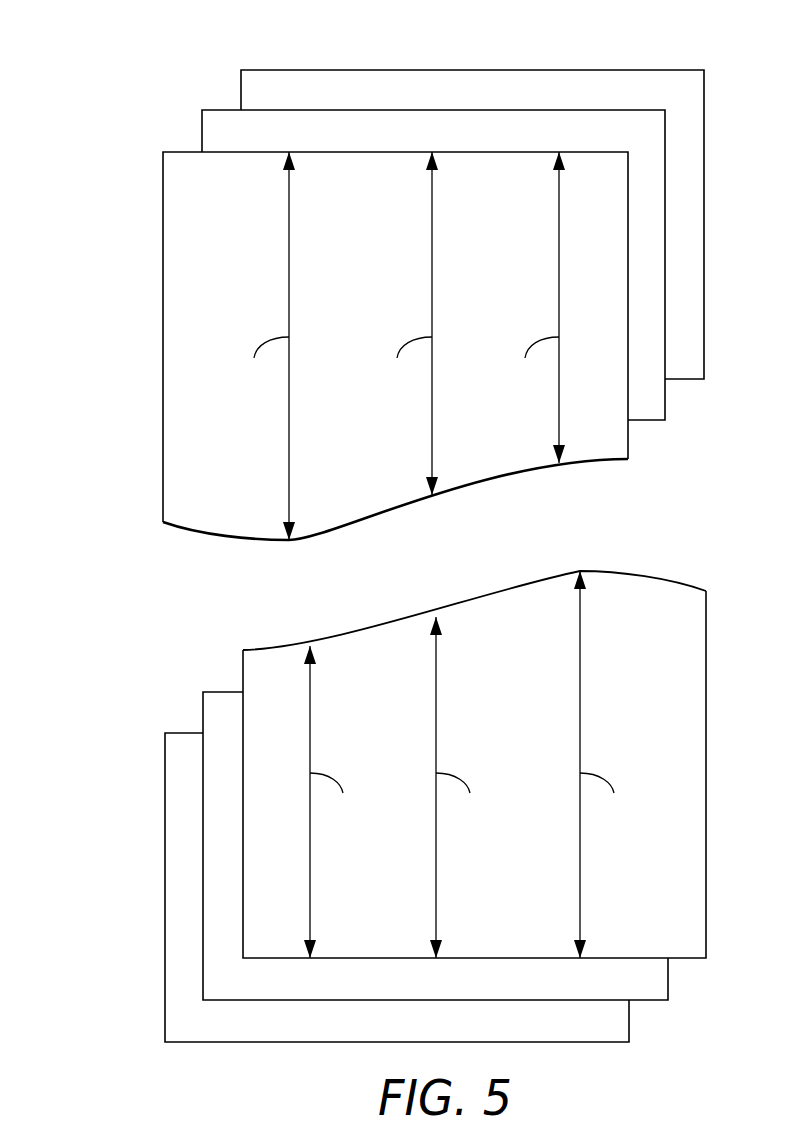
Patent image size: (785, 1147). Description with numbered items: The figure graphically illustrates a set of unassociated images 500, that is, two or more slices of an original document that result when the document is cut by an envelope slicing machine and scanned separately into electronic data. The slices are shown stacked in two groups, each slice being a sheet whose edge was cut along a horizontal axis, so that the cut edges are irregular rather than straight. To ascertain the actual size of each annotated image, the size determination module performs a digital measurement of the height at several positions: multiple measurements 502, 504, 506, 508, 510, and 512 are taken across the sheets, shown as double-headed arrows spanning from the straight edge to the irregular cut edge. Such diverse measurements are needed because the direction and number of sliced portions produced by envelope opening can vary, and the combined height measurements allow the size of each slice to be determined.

The unassociated images 500 is at (157, 60).
The measurement 502 is at (289, 195).
The measurement 504 is at (432, 195).
The measurement 506 is at (559, 195).
The measurement 508 is at (310, 915).
The measurement 510 is at (436, 915).
The measurement 512 is at (580, 915).